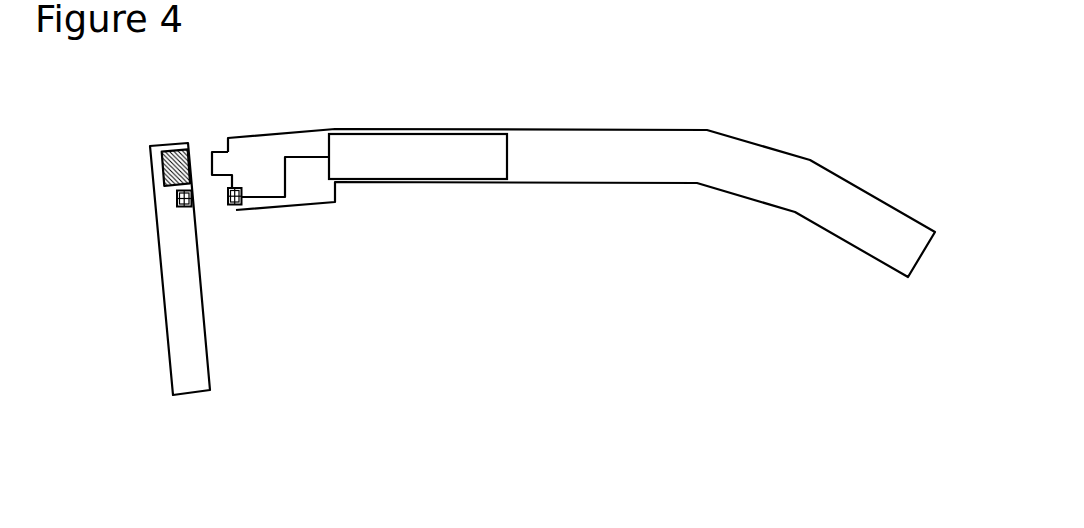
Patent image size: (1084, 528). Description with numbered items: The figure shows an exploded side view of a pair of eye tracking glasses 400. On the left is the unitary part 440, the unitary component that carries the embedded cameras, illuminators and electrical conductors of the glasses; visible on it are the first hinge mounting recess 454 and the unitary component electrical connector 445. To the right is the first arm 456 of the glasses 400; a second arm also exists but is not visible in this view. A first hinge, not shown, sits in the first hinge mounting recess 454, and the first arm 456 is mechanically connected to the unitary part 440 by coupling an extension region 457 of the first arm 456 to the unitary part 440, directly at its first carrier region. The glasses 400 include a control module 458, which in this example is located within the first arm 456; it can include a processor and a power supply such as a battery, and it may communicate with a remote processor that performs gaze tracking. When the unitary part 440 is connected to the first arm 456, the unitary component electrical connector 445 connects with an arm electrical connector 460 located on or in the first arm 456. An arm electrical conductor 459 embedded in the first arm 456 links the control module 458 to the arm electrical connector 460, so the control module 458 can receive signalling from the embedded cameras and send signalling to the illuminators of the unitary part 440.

The eye tracking glasses 400 is at (683, 86).
The unitary part 440 is at (168, 357).
The unitary component electrical connector 445 is at (178, 198).
The first hinge mounting recess 454 is at (163, 170).
The first arm 456 is at (555, 128).
The extension region 457 is at (219, 148).
The control module 458 is at (418, 179).
The arm electrical conductor 459 is at (293, 157).
The arm electrical connector 460 is at (237, 207).